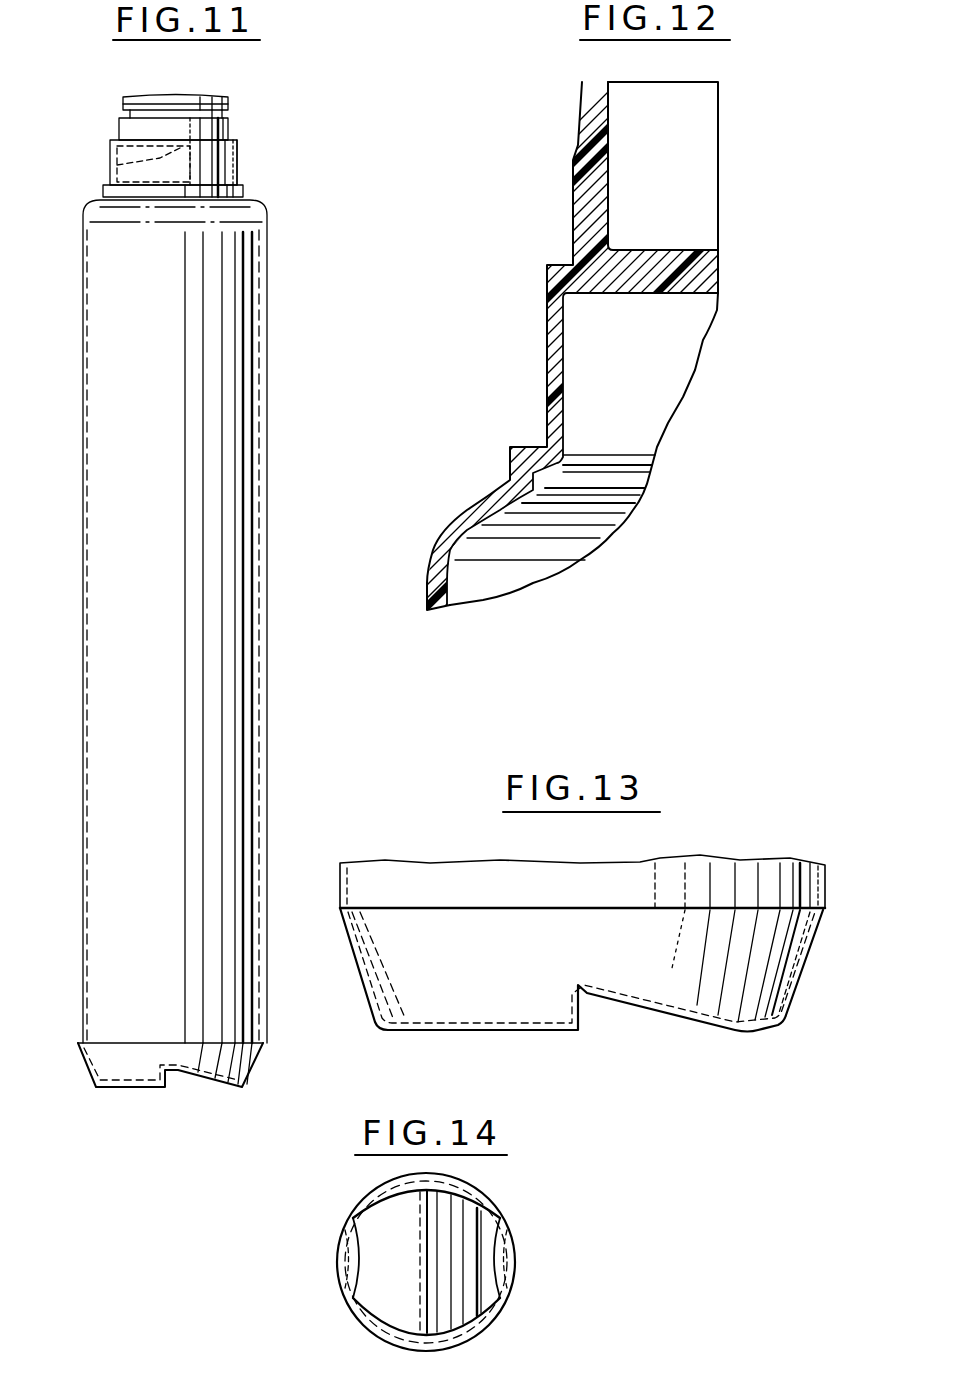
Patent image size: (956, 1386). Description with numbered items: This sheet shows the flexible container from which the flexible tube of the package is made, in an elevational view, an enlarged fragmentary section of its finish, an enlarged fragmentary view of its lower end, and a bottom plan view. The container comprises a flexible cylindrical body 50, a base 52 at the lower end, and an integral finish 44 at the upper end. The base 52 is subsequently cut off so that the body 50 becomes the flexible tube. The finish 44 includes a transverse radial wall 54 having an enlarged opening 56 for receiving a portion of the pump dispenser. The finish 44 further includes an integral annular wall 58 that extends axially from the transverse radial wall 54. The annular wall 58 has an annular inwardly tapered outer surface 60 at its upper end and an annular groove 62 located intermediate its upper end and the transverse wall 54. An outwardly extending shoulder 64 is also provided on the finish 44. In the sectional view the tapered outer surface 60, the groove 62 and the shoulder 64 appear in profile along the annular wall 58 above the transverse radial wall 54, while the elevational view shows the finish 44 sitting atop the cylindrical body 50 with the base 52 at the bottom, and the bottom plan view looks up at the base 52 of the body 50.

In FIG. 11, the finish 44 is at (243, 140).
In FIG. 12, the finish 44 is at (722, 195).
In FIG. 11, the flexible cylindrical body 50 is at (238, 800).
In FIG. 12, the flexible cylindrical body 50 is at (427, 595).
In FIG. 13, the flexible cylindrical body 50 is at (425, 882).
In FIG. 14, the flexible cylindrical body 50 is at (338, 1240).
In FIG. 11, the base 52 is at (255, 1065).
In FIG. 13, the base 52 is at (800, 975).
In FIG. 14, the base 52 is at (492, 1210).
In FIG. 11, the transverse radial wall 54 is at (190, 147).
In FIG. 12, the transverse radial wall 54 is at (700, 293).
In FIG. 11, the enlarged opening 56 is at (110, 166).
In FIG. 11, the annular wall 58 is at (237, 165).
In FIG. 12, the annular wall 58 is at (583, 200).
In FIG. 11, the inwardly tapered outer surface 60 is at (123, 101).
In FIG. 12, the inwardly tapered outer surface 60 is at (578, 115).
In FIG. 11, the annular groove 62 is at (232, 118).
In FIG. 12, the annular groove 62 is at (583, 150).
In FIG. 11, the outwardly extending shoulder 64 is at (110, 140).
In FIG. 12, the outwardly extending shoulder 64 is at (560, 265).